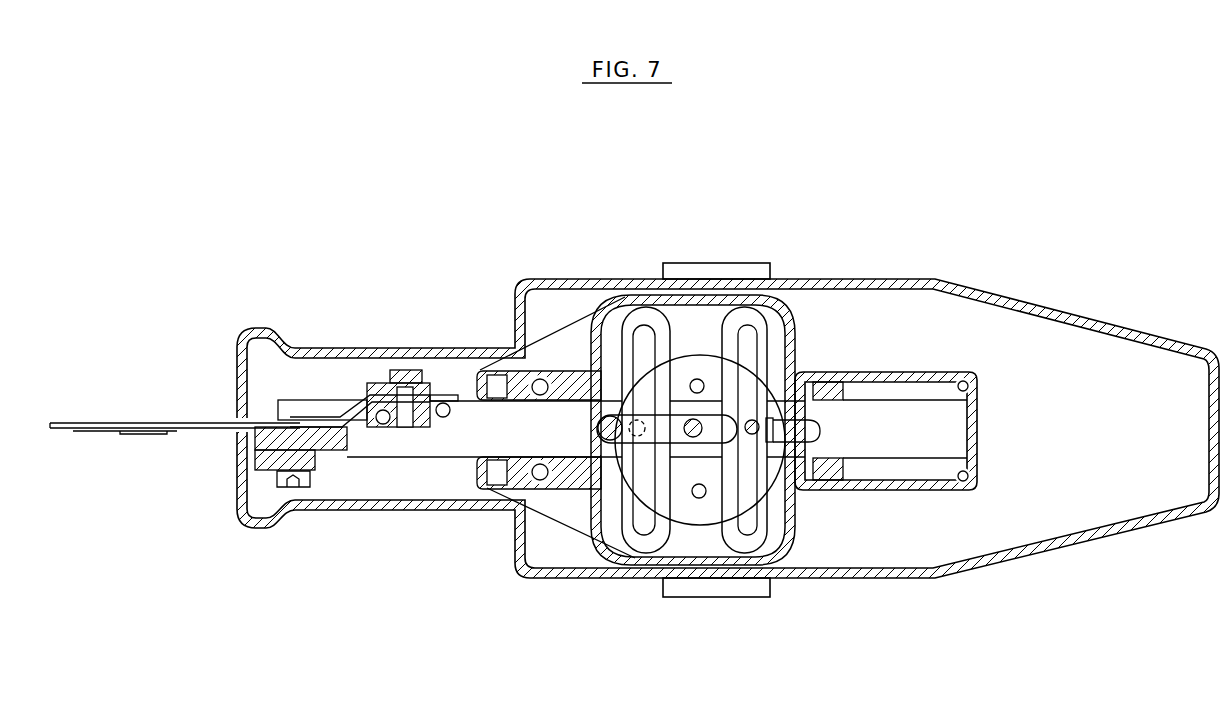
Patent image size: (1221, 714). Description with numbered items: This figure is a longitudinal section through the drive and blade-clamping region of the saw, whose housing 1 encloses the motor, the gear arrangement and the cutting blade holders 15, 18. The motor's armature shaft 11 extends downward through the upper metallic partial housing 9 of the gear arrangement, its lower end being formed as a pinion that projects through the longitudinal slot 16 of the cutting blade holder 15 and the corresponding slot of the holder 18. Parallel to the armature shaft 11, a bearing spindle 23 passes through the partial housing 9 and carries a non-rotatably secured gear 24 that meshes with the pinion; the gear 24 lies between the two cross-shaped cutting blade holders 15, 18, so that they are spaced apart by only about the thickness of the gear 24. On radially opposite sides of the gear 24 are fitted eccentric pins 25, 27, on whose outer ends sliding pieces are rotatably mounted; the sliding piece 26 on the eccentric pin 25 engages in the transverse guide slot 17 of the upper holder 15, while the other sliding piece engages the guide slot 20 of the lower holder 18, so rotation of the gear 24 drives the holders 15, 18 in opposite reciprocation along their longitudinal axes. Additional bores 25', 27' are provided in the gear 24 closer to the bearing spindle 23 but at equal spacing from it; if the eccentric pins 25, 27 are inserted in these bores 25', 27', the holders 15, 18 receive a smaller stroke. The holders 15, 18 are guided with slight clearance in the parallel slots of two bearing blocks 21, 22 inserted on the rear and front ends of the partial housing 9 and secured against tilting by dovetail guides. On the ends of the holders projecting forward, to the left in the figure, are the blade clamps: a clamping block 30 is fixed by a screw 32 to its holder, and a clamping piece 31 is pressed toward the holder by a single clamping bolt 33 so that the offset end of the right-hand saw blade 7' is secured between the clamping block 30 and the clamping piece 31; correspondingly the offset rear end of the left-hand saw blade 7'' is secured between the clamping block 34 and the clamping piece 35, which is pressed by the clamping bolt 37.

The housing 1 is at (935, 281).
The right-hand saw blade 7' is at (353, 329).
The left-hand saw blade 7'' is at (175, 502).
The upper metallic partial housing 9 is at (567, 488).
The armature shaft 11 is at (603, 440).
The upper cutting blade holder 15 is at (890, 438).
The longitudinal slot 16 is at (727, 442).
The guide slot 17 is at (755, 337).
The lower cutting blade holder 18 is at (600, 290).
The guide slot 20 is at (633, 333).
The bearing block 21 is at (830, 478).
The bearing block 22 is at (495, 465).
The bearing spindle 23 is at (697, 498).
The gear 24 is at (680, 367).
The eccentric pin 25 is at (826, 311).
The bore 25' is at (712, 283).
The sliding piece 26 is at (758, 405).
The eccentric pin 27 is at (648, 531).
The bore 27' is at (659, 558).
The clamping block 30 is at (443, 434).
The clamping piece 31 is at (375, 387).
The screw 32 is at (443, 408).
The clamping bolt 33 is at (392, 370).
The clamping block 34 is at (325, 452).
The clamping piece 35 is at (283, 489).
The clamping bolt 37 is at (300, 470).